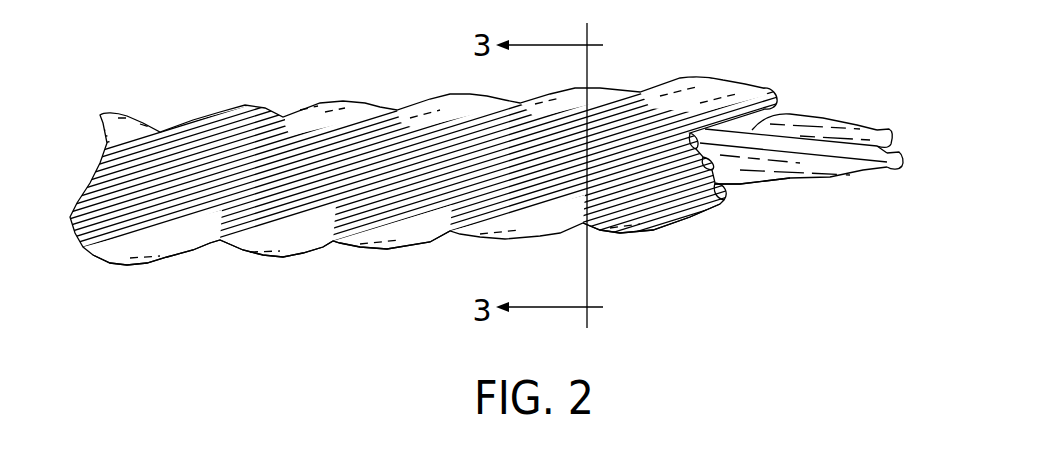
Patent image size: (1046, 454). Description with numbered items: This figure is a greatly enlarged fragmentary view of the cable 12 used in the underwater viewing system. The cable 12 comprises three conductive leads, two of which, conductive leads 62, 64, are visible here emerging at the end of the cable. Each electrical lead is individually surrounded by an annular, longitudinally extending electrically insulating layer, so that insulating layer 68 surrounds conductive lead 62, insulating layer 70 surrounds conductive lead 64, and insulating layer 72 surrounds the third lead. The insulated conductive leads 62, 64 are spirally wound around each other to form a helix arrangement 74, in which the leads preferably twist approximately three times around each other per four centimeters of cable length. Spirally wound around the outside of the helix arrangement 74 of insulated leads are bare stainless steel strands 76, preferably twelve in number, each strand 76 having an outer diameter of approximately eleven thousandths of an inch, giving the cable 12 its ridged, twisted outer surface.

The cable 12 is at (316, 100).
The conductive lead 62 is at (888, 129).
The conductive lead 64 is at (888, 169).
The electrically insulating layer 68 is at (832, 114).
The electrically insulating layer 70 is at (857, 169).
The electrically insulating layer 72 is at (812, 175).
The helix arrangement 74 is at (765, 188).
The bare stainless steel strands 76 is at (142, 264).